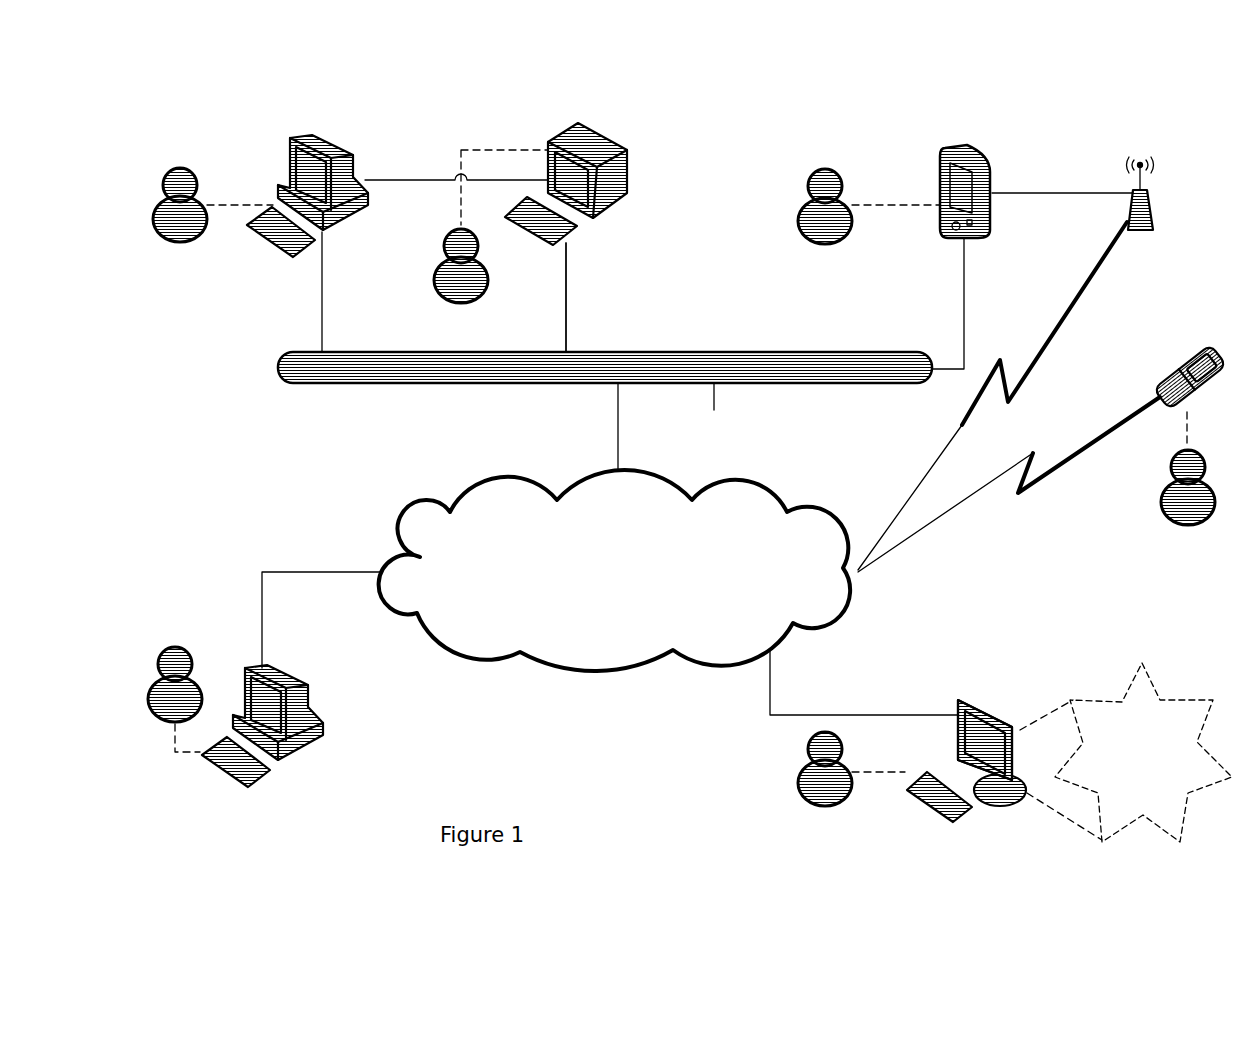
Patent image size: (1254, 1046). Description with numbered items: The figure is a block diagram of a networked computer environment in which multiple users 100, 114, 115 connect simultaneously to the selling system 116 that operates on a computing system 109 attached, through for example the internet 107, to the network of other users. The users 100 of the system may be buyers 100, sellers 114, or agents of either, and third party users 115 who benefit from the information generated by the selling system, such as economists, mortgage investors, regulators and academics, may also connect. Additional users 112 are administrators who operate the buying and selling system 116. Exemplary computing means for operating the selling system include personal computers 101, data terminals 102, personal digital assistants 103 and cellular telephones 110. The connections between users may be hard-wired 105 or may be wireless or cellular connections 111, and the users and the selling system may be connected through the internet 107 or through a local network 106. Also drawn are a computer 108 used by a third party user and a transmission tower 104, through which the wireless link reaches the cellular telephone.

The user 100 is at (182, 256).
The personal computer 101 is at (322, 124).
The data terminal 102 is at (596, 122).
The personal digital assistant 103 is at (967, 138).
The wireless transmission tower 104 is at (1128, 144).
The hard-wired connection 105 is at (576, 285).
The local network 106 is at (399, 402).
The internet 107 is at (450, 478).
The computer 108 is at (233, 650).
The computing system 109 is at (1020, 711).
The cellular telephone 110 is at (1198, 338).
The wireless or cellular connection 111 is at (1070, 432).
The administrator user 112 is at (788, 787).
The seller 114 is at (834, 156).
The third party user 115 is at (178, 638).
The selling system 116 is at (1174, 680).